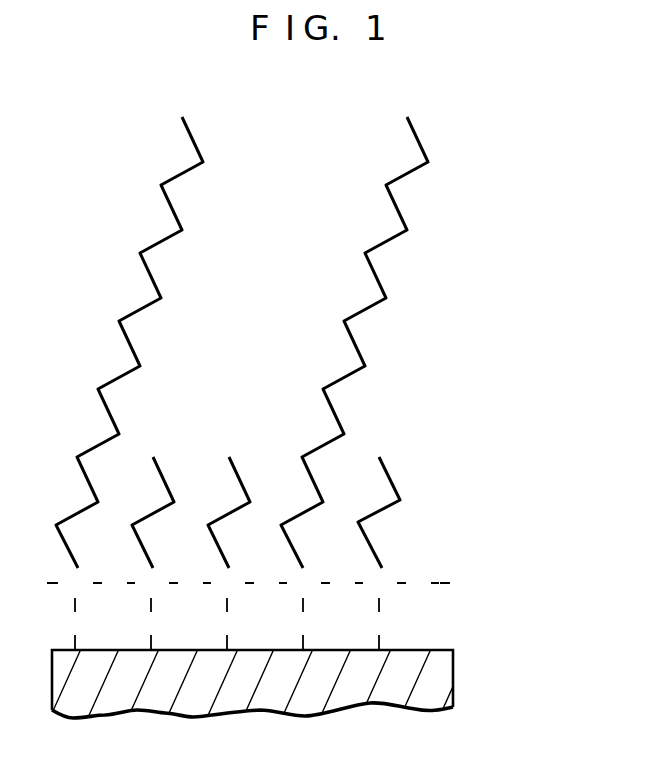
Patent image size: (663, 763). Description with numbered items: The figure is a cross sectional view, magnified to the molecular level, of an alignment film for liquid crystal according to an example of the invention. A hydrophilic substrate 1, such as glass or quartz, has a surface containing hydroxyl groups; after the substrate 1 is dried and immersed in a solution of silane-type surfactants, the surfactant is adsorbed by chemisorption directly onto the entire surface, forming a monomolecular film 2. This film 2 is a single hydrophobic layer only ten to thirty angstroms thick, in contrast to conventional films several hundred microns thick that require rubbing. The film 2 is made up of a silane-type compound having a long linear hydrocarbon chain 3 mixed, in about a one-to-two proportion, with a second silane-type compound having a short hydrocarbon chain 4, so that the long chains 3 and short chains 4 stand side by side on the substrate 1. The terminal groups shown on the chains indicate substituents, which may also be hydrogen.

The substrate 1 is at (440, 683).
The monomolecular film 2 is at (475, 92).
The long linear hydrocarbon chain 3 is at (400, 208).
The short hydrocarbon chain 4 is at (383, 510).